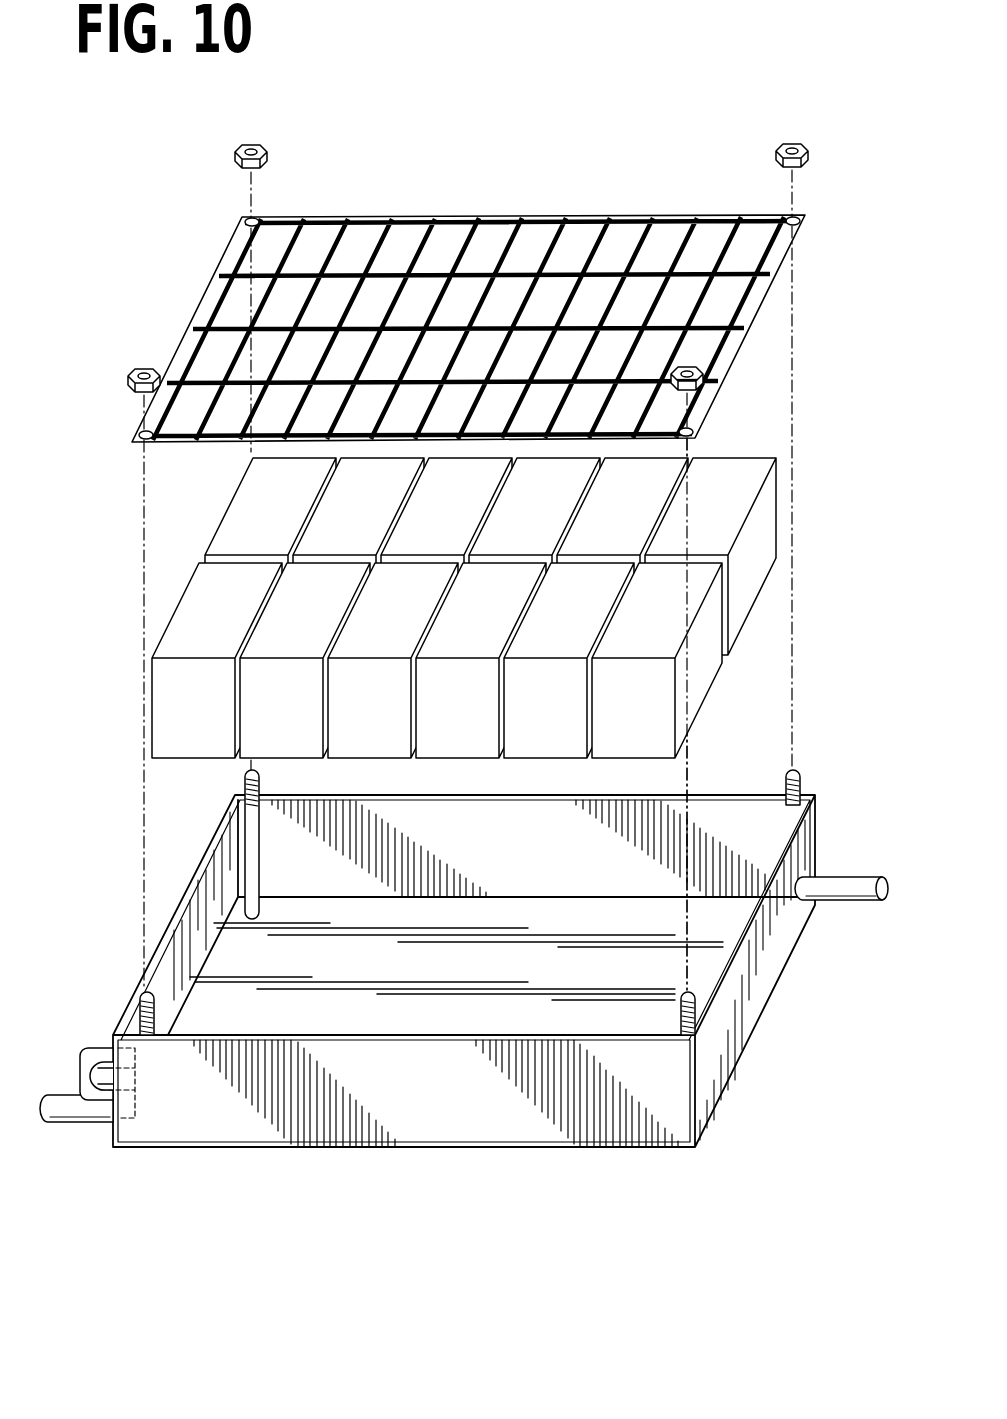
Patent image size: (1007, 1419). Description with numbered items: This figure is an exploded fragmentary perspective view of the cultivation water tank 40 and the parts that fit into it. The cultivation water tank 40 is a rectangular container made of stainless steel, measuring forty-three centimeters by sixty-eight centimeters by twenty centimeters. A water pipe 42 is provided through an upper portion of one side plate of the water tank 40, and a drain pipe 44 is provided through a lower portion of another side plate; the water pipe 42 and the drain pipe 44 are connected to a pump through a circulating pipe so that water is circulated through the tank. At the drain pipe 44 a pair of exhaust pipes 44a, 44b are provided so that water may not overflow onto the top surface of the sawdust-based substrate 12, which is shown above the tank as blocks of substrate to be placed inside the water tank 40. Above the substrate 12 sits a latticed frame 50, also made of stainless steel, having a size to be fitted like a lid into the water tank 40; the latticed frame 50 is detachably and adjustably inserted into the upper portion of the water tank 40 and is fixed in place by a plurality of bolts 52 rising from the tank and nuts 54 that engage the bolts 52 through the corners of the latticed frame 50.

The sawdust-based substrate 12 is at (258, 500).
The cultivation water tank 40 is at (577, 1160).
The water pipe 42 is at (852, 878).
The drain pipe 44 is at (68, 1123).
The exhaust pipe 44a is at (108, 1053).
The exhaust pipe 44b is at (102, 1080).
The latticed frame 50 is at (506, 207).
The bolt 52 is at (796, 772).
The nut 54 is at (237, 152).